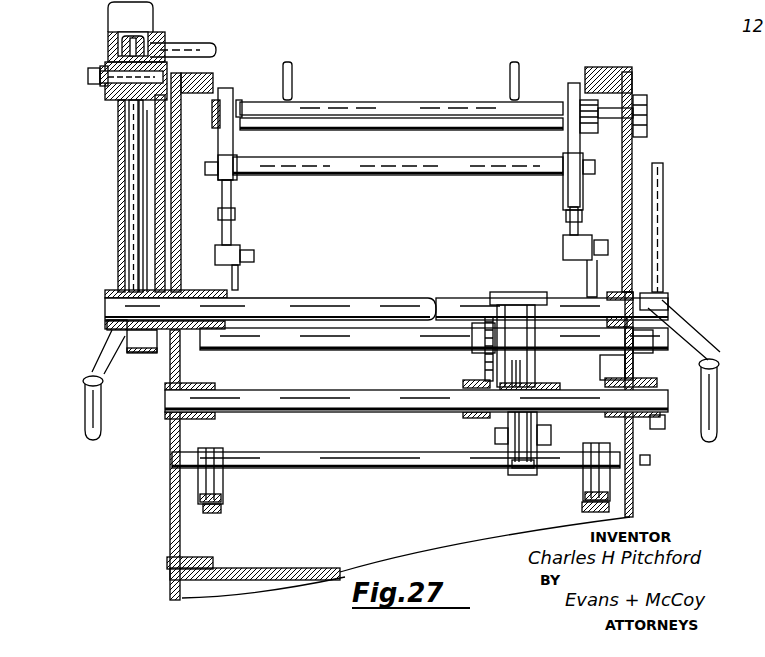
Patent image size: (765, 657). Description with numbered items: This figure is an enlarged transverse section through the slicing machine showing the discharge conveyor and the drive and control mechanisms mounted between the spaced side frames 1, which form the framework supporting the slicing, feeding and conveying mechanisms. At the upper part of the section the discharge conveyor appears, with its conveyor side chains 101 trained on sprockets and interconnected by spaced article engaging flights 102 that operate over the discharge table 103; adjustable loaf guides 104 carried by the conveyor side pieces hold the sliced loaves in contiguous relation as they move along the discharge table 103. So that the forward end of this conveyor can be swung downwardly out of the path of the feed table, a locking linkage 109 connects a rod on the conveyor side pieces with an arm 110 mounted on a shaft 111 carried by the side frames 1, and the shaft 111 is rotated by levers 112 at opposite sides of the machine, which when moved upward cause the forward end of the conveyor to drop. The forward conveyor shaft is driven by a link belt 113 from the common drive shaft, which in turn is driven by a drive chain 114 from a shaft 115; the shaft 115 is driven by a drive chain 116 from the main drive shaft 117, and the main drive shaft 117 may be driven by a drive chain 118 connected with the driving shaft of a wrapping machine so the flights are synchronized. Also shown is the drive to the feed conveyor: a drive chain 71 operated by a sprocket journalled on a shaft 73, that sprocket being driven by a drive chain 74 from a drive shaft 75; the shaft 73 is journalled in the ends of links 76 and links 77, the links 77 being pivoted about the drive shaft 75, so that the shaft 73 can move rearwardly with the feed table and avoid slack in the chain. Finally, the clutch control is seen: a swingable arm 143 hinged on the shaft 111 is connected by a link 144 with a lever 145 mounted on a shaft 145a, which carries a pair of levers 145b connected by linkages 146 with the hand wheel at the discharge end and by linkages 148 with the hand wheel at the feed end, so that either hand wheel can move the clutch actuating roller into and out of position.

The side frames 1 is at (170, 516).
The drive chain 71 is at (158, 46).
The shaft 73 is at (90, 88).
The drive chain 74 is at (130, 252).
The drive shaft 75 is at (344, 304).
The links 76 is at (150, 105).
The links 77 is at (160, 206).
The conveyor side chains 101 is at (232, 98).
The article engaging flights 102 is at (384, 118).
The discharge table 103 is at (445, 130).
The adjustable loaf guides 104 is at (292, 84).
The locking linkage 109 is at (245, 230).
The arm 110 is at (250, 283).
The shaft 111 is at (446, 303).
The levers 112 is at (86, 418).
The link belt 113 is at (645, 106).
The drive chain 114 is at (660, 268).
The shaft 115 is at (284, 354).
The drive chain 116 is at (482, 366).
The main drive shaft 117 is at (336, 414).
The drive chain 118 is at (655, 430).
The swingable arm 143 is at (518, 290).
The link 144 is at (500, 430).
The lever 145 is at (534, 446).
The shaft 145a is at (340, 478).
The levers 145b is at (225, 488).
The linkages 146 is at (558, 511).
The linkages 148 is at (212, 514).